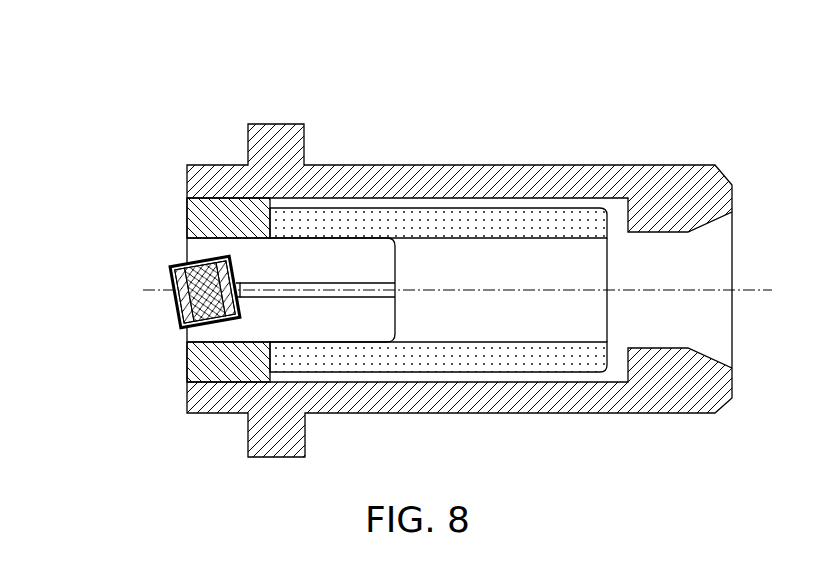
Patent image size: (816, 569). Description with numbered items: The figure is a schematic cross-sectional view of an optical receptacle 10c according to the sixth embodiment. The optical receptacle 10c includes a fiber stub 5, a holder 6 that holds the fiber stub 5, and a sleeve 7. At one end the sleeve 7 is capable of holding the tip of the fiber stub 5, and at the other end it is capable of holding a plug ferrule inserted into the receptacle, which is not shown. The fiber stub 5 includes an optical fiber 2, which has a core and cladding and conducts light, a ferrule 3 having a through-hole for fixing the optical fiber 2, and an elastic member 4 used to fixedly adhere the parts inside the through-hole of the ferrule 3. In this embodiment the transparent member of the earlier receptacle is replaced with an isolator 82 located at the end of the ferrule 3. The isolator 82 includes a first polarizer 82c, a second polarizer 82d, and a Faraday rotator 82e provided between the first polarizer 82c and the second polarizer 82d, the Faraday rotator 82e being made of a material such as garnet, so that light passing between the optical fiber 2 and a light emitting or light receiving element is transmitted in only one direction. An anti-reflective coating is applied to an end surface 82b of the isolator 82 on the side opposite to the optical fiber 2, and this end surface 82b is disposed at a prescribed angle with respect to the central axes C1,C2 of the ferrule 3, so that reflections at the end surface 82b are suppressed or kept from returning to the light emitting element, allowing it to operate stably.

The optical receptacle 10c is at (573, 94).
The holder 6 is at (496, 182).
The sleeve 7 is at (578, 220).
The fiber stub 5 is at (390, 86).
The ferrule 3 is at (343, 258).
The optical fiber 2 is at (372, 290).
The elastic member 4 is at (238, 286).
The isolator 82 is at (151, 248).
The end surface 82b is at (171, 277).
The first polarizer 82c is at (183, 305).
The Faraday rotator 82e is at (198, 326).
The second polarizer 82d is at (232, 297).
The central axes C1,C2 is at (658, 290).